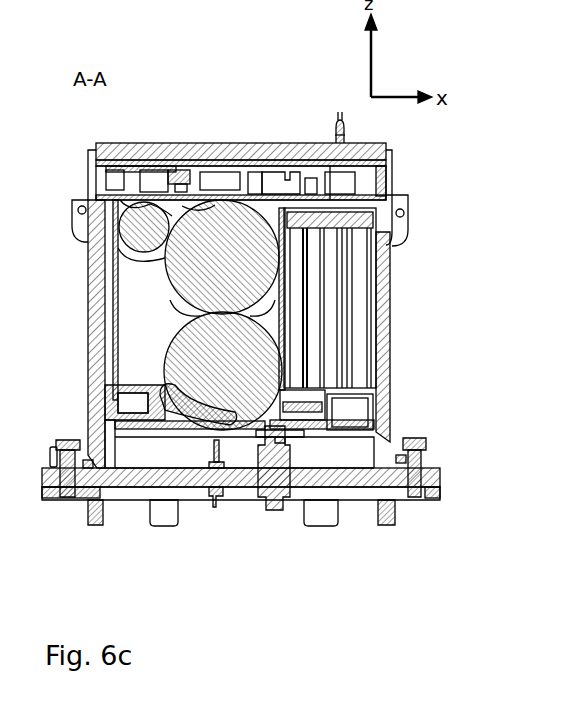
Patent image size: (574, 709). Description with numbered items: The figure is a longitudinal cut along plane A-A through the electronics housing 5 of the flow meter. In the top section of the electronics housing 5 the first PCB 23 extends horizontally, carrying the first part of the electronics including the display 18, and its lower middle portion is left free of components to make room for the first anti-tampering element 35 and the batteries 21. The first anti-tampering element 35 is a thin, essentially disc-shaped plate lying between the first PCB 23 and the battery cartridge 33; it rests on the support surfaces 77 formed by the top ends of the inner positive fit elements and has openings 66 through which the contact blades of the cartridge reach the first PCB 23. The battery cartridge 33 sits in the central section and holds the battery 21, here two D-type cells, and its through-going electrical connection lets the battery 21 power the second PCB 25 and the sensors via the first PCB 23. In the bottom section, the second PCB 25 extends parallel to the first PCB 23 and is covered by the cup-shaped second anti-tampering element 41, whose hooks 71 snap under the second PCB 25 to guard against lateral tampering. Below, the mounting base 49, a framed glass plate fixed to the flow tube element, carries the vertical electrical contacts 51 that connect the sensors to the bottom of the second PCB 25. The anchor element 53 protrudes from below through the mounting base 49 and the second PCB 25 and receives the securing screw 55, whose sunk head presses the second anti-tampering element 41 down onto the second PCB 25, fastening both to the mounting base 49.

The electronics housing 5 is at (97, 313).
The display 18 is at (240, 170).
The battery 21 is at (237, 269).
The first PCB 23 is at (137, 190).
The second PCB 25 is at (168, 437).
The battery cartridge 33 is at (283, 333).
The first anti-tampering element 35 is at (240, 160).
The second anti-tampering element 41 is at (138, 410).
The mounting base 49 is at (127, 480).
The electrical contacts 51 is at (215, 452).
The anchor element 53 is at (273, 485).
The securing screw 55 is at (279, 442).
The openings 66 is at (307, 290).
The hooks 71 is at (377, 442).
The support surface 77 is at (355, 268).